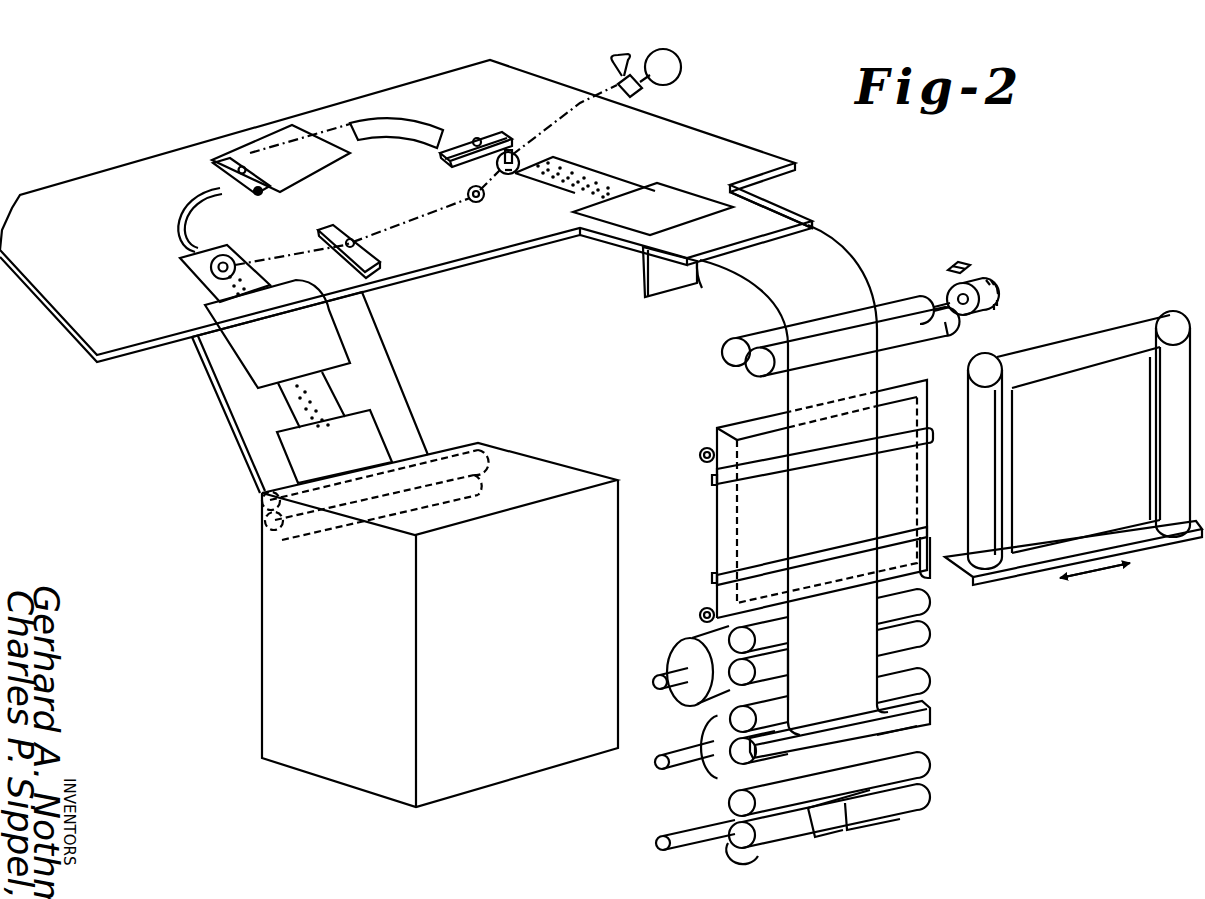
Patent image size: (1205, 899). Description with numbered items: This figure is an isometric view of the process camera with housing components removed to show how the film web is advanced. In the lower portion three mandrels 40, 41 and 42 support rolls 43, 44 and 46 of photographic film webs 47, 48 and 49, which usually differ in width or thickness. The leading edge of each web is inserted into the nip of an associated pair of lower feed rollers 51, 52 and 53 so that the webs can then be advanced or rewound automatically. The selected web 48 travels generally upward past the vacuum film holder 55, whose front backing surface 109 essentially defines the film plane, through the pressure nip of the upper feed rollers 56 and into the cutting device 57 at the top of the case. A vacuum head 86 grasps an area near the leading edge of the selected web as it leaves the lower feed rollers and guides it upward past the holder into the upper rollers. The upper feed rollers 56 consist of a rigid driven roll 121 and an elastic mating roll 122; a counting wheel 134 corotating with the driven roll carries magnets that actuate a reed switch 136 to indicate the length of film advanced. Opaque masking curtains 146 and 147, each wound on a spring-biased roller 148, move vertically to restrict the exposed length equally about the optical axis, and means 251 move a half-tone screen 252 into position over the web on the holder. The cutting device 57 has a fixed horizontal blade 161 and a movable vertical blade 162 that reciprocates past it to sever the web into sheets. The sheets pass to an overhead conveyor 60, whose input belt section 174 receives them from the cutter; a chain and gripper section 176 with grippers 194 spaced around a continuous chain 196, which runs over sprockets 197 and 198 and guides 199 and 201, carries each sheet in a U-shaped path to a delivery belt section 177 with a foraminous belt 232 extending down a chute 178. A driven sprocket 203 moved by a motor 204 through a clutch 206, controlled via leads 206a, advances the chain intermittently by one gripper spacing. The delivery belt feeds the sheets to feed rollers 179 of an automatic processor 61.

The mandrel 40 is at (660, 680).
The mandrel 41 is at (663, 765).
The mandrel 42 is at (663, 840).
The roll of photographic film 43 is at (690, 655).
The roll of photographic film 44 is at (713, 727).
The roll of photographic film 46 is at (743, 853).
The film web 47 is at (790, 668).
The film web 48 is at (833, 258).
The film web 49 is at (847, 825).
The pair of lower feed rollers 51 is at (932, 615).
The pair of lower feed rollers 52 is at (930, 697).
The pair of lower feed rollers 53 is at (928, 778).
The vacuum film holder 55 is at (713, 510).
The pair of upper feed rollers 56 is at (948, 335).
The cutting device 57 is at (798, 207).
The overhead conveyor 60 is at (668, 137).
The automatic processor 61 is at (276, 630).
The vacuum head 86 is at (897, 720).
The backing surface 109 is at (745, 532).
The driven roll 121 is at (917, 280).
The elastic mating roll 122 is at (910, 330).
The counting wheel 134 is at (990, 289).
The reed switch 136 is at (953, 263).
The opaque masking curtain 146 is at (930, 418).
The opaque masking curtain 147 is at (925, 547).
The spring-biased roller 148 is at (700, 457).
The fixed cutting blade 161 is at (704, 288).
The movable cutting blade 162 is at (643, 282).
The conveyor input belt section 174 is at (592, 177).
The chain and gripper section 176 is at (455, 137).
The delivery belt section 177 is at (207, 290).
The chute 178 is at (393, 388).
The feed rollers 179 is at (485, 460).
The gripper 194 is at (243, 197).
The continuous chain 196 is at (412, 218).
The sprocket 197 is at (211, 269).
The sprocket 198 is at (476, 203).
The guide 199 is at (196, 196).
The guide 201 is at (418, 123).
The driven sprocket 203 is at (510, 173).
The motor 204 is at (682, 72).
The clutch 206 is at (640, 92).
The leads 206a is at (608, 58).
The foraminous belt 232 is at (325, 393).
The screen moving means 251 is at (1150, 547).
The half-tone screen 252 is at (1093, 383).